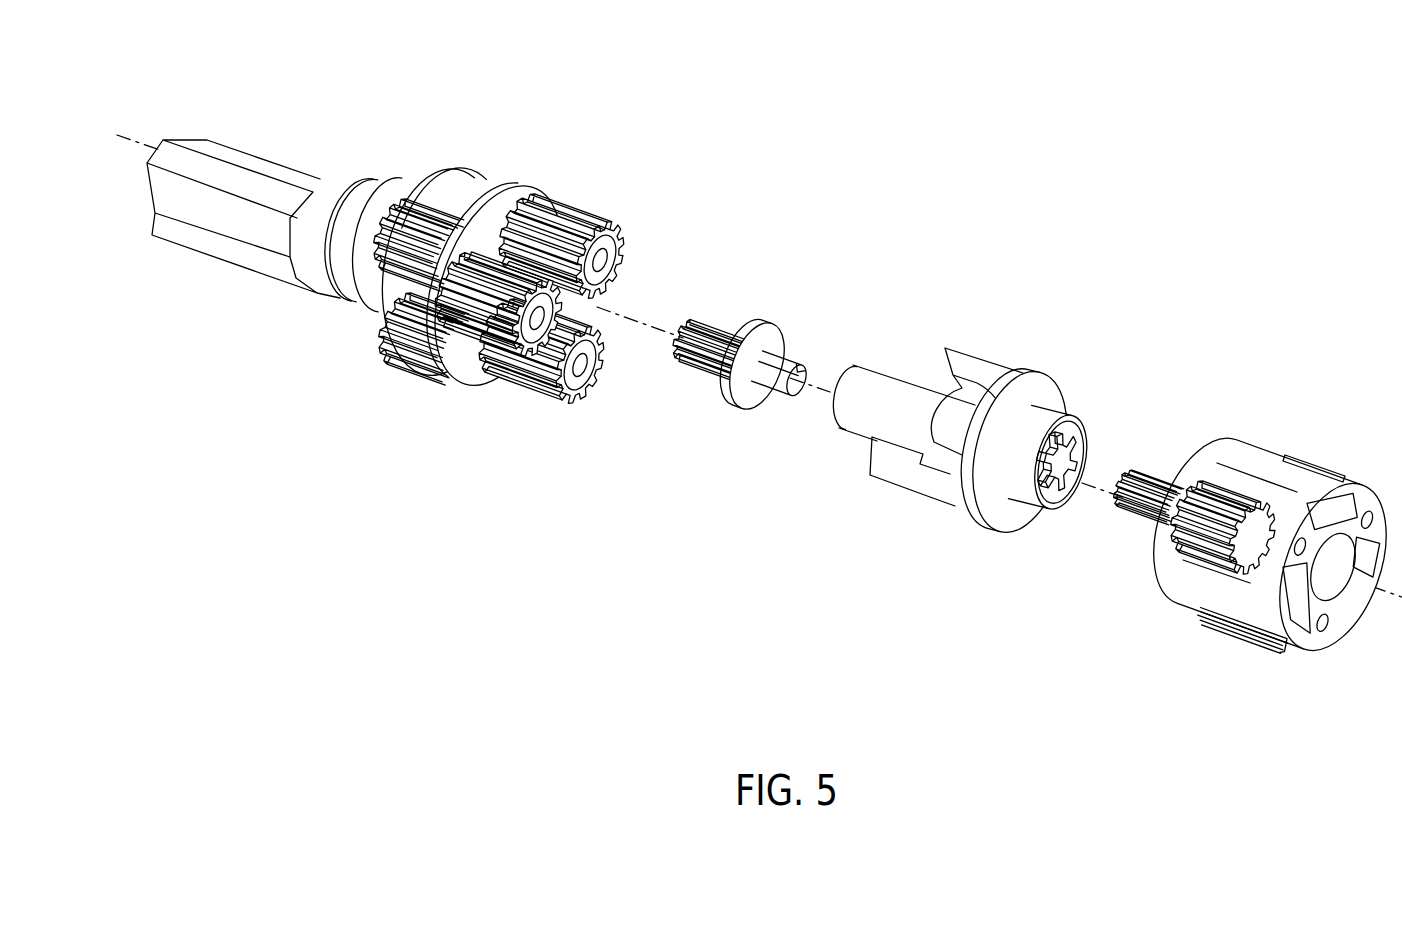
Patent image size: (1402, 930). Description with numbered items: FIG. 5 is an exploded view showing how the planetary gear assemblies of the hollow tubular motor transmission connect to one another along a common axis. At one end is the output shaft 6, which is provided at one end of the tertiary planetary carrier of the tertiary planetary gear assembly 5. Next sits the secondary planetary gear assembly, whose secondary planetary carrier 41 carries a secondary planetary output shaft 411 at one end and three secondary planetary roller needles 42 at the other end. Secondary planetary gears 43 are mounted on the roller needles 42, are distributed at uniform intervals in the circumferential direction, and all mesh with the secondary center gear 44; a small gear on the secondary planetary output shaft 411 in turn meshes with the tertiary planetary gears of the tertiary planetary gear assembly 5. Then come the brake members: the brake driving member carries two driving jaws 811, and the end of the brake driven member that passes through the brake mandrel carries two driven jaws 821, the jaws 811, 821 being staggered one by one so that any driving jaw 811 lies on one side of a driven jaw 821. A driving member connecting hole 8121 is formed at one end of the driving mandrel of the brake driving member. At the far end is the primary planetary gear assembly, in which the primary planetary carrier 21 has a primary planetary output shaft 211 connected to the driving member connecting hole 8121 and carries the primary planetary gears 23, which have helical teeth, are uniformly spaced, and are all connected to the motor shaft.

The output shaft 6 is at (267, 160).
The tertiary planetary gear assembly 5 is at (482, 264).
The secondary planetary carrier 41 is at (498, 217).
The secondary planetary output shaft 411 is at (420, 290).
The secondary planetary roller needles 42 is at (600, 260).
The secondary planetary gears 43 is at (580, 222).
The secondary center gear 44 is at (722, 325).
The driving jaws 811 is at (892, 483).
The driven jaws 821 is at (1030, 439).
The driving member connecting hole 8121 is at (1060, 482).
The primary planetary output shaft 211 is at (1148, 488).
The primary planetary carrier 21 is at (1265, 517).
The primary planetary gears 23 is at (1300, 478).